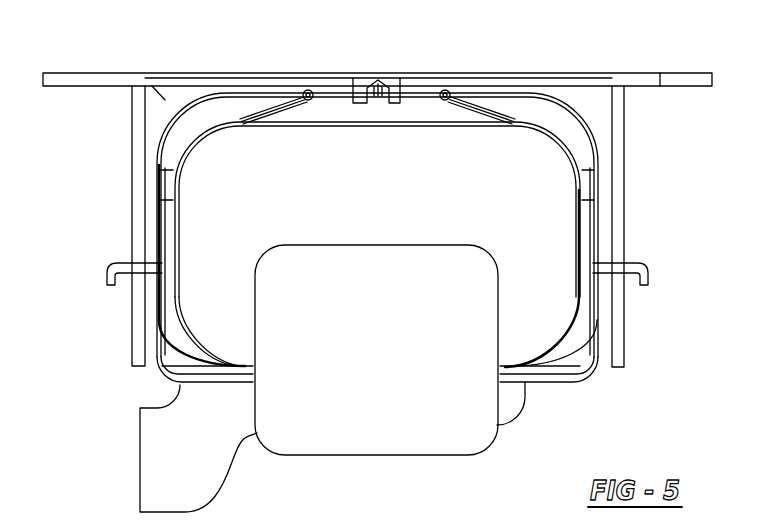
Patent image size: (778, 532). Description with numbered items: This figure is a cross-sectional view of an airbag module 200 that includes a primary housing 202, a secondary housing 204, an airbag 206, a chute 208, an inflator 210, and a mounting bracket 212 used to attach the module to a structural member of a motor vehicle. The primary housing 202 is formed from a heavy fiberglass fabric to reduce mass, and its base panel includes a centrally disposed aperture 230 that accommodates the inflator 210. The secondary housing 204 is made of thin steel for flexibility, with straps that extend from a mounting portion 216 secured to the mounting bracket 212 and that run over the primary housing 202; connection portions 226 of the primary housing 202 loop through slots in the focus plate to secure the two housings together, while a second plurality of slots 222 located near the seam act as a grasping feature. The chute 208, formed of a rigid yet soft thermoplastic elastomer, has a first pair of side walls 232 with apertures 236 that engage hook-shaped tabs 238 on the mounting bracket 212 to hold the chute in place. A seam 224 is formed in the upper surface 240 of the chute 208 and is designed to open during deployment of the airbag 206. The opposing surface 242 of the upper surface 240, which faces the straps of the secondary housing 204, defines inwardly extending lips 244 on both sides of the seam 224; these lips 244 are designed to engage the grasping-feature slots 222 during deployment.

The airbag module 200 is at (498, 460).
The primary housing 202 is at (567, 356).
The secondary housing 204 is at (592, 120).
The airbag 206 is at (384, 216).
The chute 208 is at (660, 73).
The inflator 210 is at (383, 361).
The mounting bracket 212 is at (199, 457).
The mounting portion 216 is at (598, 237).
The second plurality of slots 222 is at (257, 526).
The seam 224 is at (378, 78).
The connection portions 226 is at (265, 114).
The centrally disposed aperture 230 is at (240, 364).
The first pair of side walls 232 is at (138, 163).
The apertures 236 is at (138, 286).
The hook-shaped tabs 238 is at (108, 265).
The upper surface 240 is at (510, 73).
The opposing surface 242 is at (152, 87).
The lips 244 is at (360, 104).